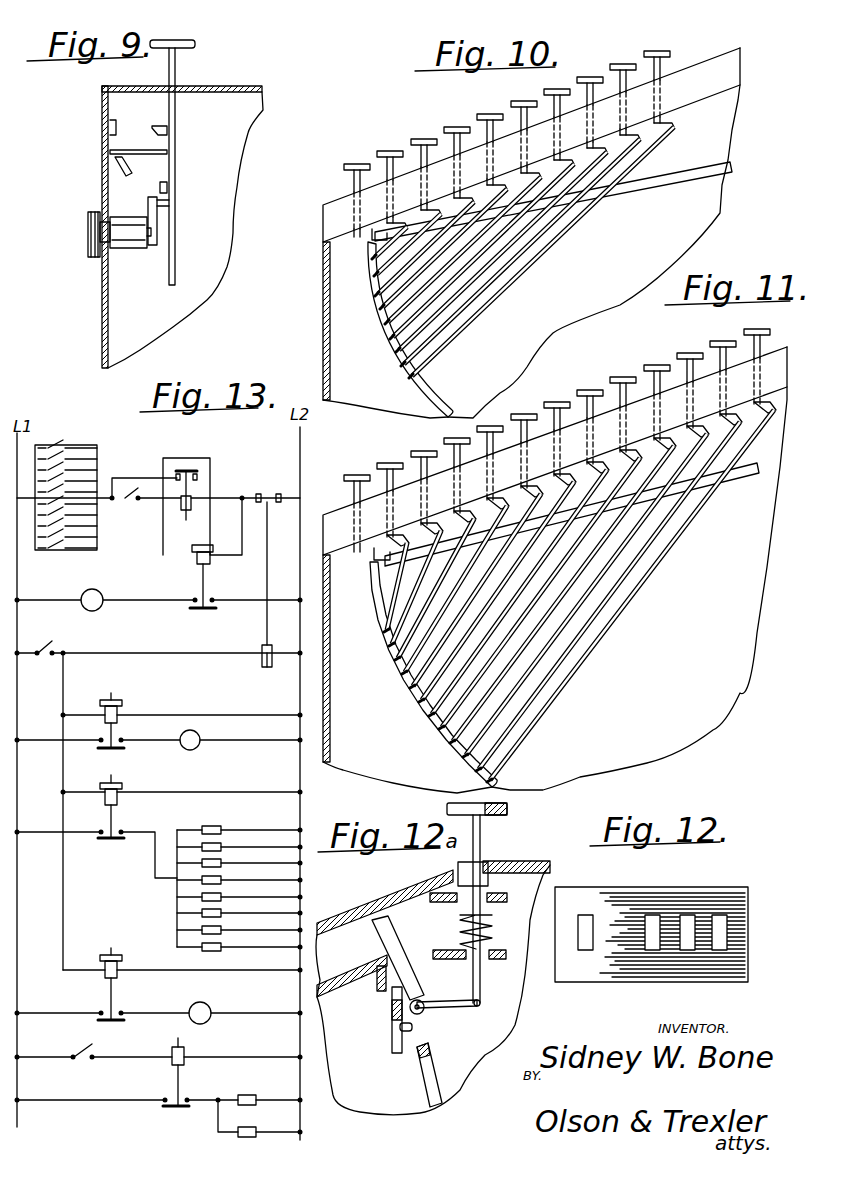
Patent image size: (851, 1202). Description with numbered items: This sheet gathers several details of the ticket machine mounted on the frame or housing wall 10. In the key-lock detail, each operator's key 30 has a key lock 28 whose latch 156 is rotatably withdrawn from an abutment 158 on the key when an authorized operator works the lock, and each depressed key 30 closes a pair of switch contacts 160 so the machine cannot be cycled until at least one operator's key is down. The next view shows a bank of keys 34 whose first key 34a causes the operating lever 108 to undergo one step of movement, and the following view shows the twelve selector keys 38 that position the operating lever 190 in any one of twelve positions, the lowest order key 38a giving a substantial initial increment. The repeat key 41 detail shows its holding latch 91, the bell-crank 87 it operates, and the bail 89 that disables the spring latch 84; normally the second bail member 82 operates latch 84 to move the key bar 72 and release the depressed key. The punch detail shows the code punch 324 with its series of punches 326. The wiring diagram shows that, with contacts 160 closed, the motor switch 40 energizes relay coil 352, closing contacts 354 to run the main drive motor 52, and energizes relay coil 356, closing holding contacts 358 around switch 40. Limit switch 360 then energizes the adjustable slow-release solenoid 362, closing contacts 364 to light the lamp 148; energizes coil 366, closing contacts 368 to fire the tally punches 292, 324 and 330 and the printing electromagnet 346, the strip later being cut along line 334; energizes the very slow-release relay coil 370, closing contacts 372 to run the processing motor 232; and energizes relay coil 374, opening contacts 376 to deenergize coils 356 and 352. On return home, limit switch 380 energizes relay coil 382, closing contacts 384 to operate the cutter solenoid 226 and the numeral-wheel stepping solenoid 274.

In FIG. 9, the housing wall 10 is at (102, 303).
In FIG. 10, the housing wall 10 is at (323, 297).
In FIG. 11, the housing wall 10 is at (330, 656).
In FIG. 12A, the housing wall 10 is at (360, 915).
In FIG. 9, the key lock 28 is at (90, 231).
In FIG. 9, the operator's key 30 is at (177, 66).
In FIG. 10, the bank of keys 34 is at (452, 128).
In FIG. 10, the first key 34a is at (384, 152).
In FIG. 11, the selector keys 38 is at (657, 364).
In FIG. 11, the lowest order key 38a is at (390, 463).
In FIG. 13, the motor bar or switch 40 is at (133, 488).
In FIG. 12A, the repeat key 41 is at (480, 830).
In FIG. 13, the main drive motor 52 is at (90, 589).
In FIG. 12A, the key bar 72 is at (340, 986).
In FIG. 12A, the second bail member 82 is at (425, 1065).
In FIG. 12A, the spring latch 84 is at (397, 1042).
In FIG. 12A, the bell-crank 87 is at (440, 1008).
In FIG. 12A, the bail 89 is at (415, 1029).
In FIG. 12A, the holding latch 91 is at (467, 904).
In FIG. 10, the operating lever 108 is at (672, 181).
In FIG. 13, the lamp 148 is at (192, 752).
In FIG. 9, the latch 156 is at (158, 208).
In FIG. 9, the abutment 158 is at (160, 187).
In FIG. 9, the switch contacts 160 is at (160, 150).
In FIG. 13, the switch contacts 160 is at (66, 442).
In FIG. 11, the operating lever 190 is at (737, 481).
In FIG. 13, the solenoid 226 is at (250, 1090).
In FIG. 13, the motor 232 is at (208, 1003).
In FIG. 13, the solenoid 274 is at (238, 1132).
In FIG. 13, the punching devices 292 is at (202, 862).
In FIG. 12, the code punch 324 is at (714, 896).
In FIG. 12, the punches 326 is at (652, 950).
In FIG. 13, the punch 330 is at (222, 930).
In FIG. 13, the cutting line 334 is at (222, 829).
In FIG. 13, the electromagnet 346 is at (204, 948).
In FIG. 13, the relay coil 352 is at (197, 560).
In FIG. 13, the relay contacts 354 is at (198, 610).
In FIG. 13, the relay coil 356 is at (193, 496).
In FIG. 13, the contacts 358 is at (224, 452).
In FIG. 13, the limit switch 360 is at (46, 648).
In FIG. 13, the relay solenoid 362 is at (110, 693).
In FIG. 13, the switch contacts 364 is at (122, 750).
In FIG. 13, the solenoid coil 366 is at (110, 775).
In FIG. 13, the switch contacts 368 is at (104, 840).
In FIG. 13, the relay coil 370 is at (103, 978).
In FIG. 13, the switch contacts 372 is at (100, 1020).
In FIG. 13, the relay coil 374 is at (265, 669).
In FIG. 13, the switch contacts 376 is at (272, 492).
In FIG. 13, the limit switch 380 is at (80, 1060).
In FIG. 13, the relay coil 382 is at (185, 1048).
In FIG. 13, the switch contacts 384 is at (163, 1105).